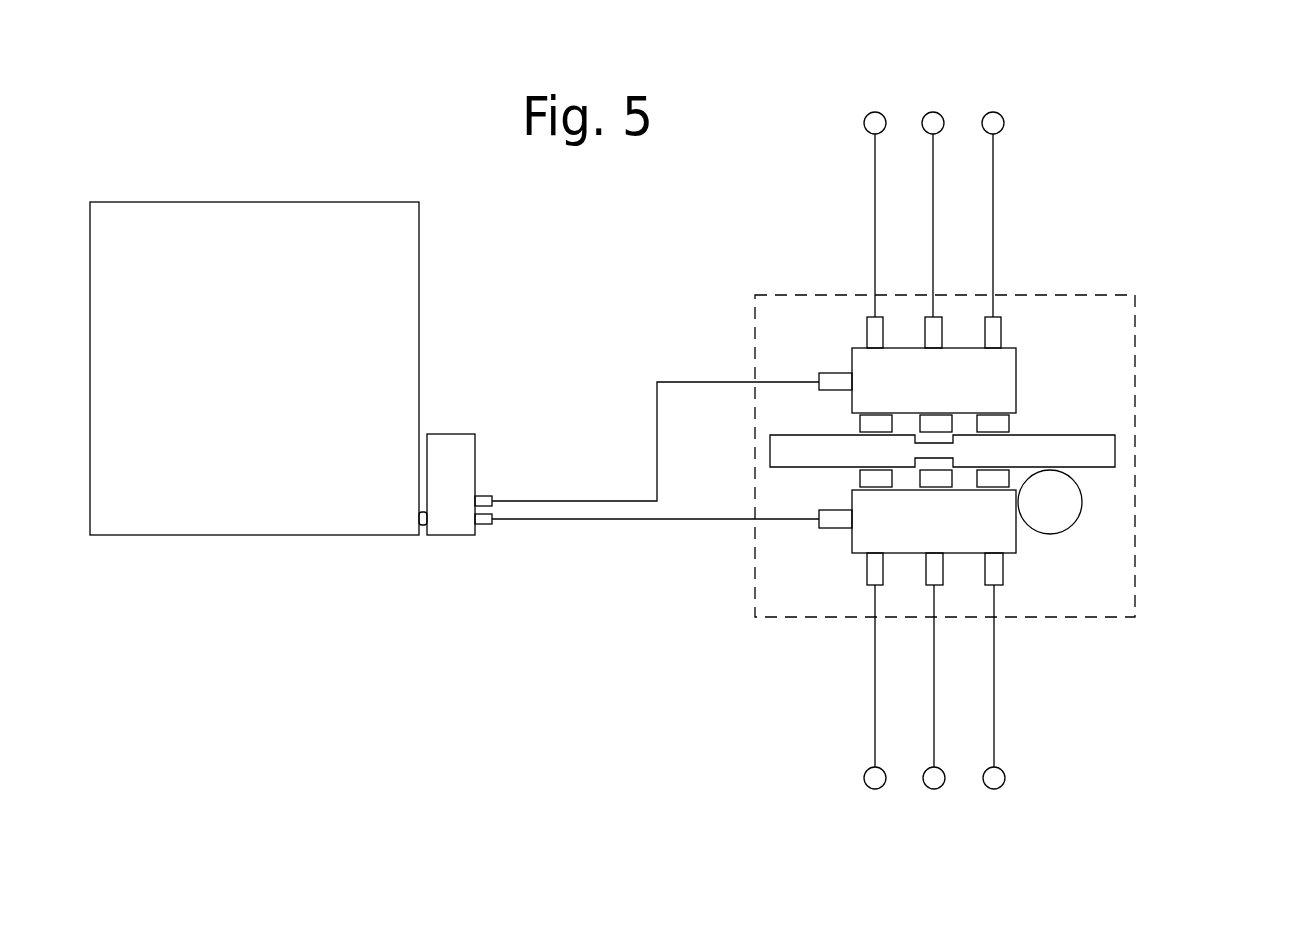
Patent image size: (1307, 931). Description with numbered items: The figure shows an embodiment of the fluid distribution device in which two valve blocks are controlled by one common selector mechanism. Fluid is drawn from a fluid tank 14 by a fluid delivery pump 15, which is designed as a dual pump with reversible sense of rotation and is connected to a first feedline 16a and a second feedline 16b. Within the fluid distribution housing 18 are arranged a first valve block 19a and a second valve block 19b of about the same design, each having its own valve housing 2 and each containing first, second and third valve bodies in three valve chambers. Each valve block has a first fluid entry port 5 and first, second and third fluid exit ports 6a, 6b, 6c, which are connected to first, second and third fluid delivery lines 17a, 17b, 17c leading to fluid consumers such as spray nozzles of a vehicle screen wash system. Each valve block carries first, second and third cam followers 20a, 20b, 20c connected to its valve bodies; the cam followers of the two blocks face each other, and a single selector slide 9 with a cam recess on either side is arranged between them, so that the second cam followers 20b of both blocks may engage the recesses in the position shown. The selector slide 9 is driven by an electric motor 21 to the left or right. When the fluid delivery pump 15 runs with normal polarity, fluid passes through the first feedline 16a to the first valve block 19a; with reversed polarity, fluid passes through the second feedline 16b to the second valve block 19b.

The valve housing 2 is at (967, 395).
The first fluid entry port 5 is at (827, 372).
The first fluid exit port 6a is at (868, 325).
The second fluid exit port 6b is at (926, 325).
The third fluid exit port 6c is at (986, 325).
The selector slide 9 is at (1090, 435).
The fluid tank 14 is at (265, 385).
The fluid delivery pump 15 is at (450, 443).
The first feedline 16a is at (549, 498).
The second feedline 16b is at (553, 522).
The first fluid delivery line 17a is at (874, 153).
The second fluid delivery line 17b is at (933, 172).
The third fluid delivery line 17c is at (993, 183).
The fluid distribution housing 18 is at (1135, 493).
The first valve block 19a is at (1012, 357).
The second valve block 19b is at (1010, 538).
The first cam follower 20a is at (867, 423).
The second cam follower 20b is at (932, 418).
The third cam follower 20c is at (993, 423).
The electric motor 21 is at (1063, 508).